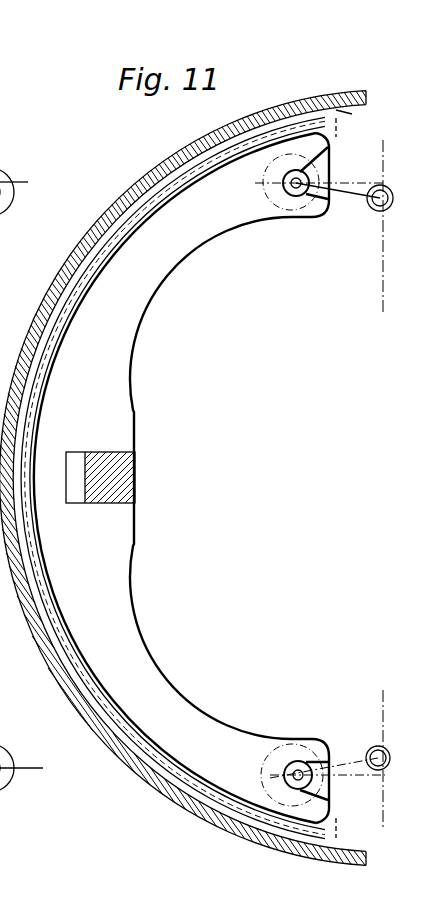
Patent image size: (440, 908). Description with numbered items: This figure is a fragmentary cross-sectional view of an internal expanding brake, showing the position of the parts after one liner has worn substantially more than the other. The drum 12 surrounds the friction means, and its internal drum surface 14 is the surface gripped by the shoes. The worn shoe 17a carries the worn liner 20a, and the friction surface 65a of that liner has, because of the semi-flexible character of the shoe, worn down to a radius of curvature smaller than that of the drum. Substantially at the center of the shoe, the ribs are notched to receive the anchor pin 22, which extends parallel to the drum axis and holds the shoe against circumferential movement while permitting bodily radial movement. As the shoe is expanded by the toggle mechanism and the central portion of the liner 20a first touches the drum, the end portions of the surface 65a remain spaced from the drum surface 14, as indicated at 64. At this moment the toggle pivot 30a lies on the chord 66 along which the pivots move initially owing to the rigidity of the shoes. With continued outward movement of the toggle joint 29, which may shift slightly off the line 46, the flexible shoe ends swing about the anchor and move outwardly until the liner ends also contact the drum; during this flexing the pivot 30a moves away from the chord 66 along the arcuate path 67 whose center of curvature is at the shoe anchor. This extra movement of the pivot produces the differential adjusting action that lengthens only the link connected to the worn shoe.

The drum 12 is at (291, 112).
The internal drum surface 14 is at (336, 110).
The liner 20a is at (152, 186).
The friction surface of the worn liner 65a is at (215, 136).
The space between liner ends and drum 64 is at (283, 127).
The worn shoe 17a is at (138, 364).
The anchor pin 22 is at (124, 480).
The arcuate path 67 is at (280, 181).
The toggle pivot 30a is at (297, 183).
The chord 66 is at (351, 180).
The toggle joint 29 is at (375, 211).
The line 46 is at (383, 246).